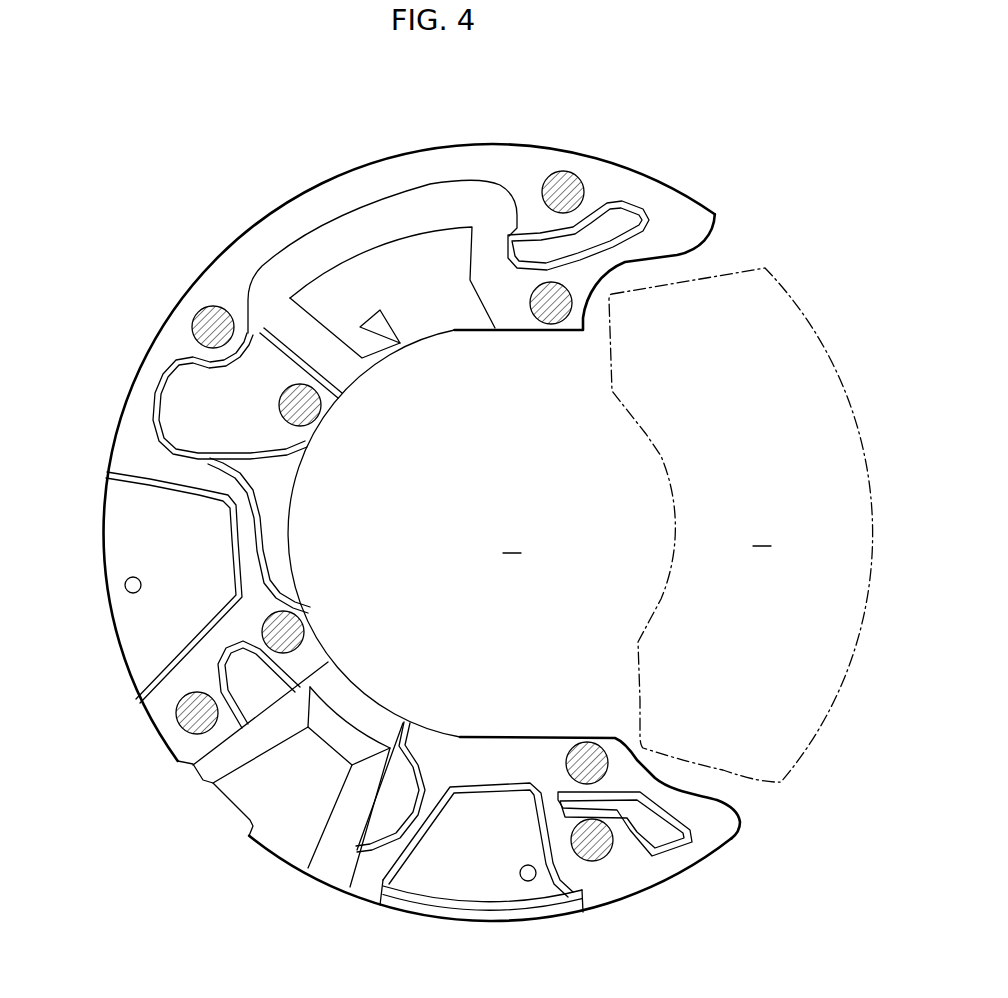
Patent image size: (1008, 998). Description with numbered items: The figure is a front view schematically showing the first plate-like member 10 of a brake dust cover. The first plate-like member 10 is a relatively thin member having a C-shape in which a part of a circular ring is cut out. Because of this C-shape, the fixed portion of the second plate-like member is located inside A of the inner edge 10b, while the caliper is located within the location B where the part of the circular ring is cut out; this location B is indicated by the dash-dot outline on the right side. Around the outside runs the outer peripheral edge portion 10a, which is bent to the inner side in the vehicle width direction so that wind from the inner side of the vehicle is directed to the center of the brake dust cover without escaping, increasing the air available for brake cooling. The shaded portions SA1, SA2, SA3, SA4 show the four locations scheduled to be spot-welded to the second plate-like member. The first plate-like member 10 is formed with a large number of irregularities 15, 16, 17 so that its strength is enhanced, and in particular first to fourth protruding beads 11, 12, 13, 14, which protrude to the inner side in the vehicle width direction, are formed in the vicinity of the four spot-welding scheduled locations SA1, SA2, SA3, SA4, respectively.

The first plate-like member 10 is at (652, 168).
The outer peripheral edge portion 10a is at (470, 146).
The inner edge 10b is at (452, 332).
The first protruding bead 11 is at (625, 213).
The second protruding bead 12 is at (183, 405).
The third protruding bead 13 is at (262, 694).
The fourth protruding bead 14 is at (634, 818).
The irregularity 15 is at (388, 266).
The irregularity 16 is at (148, 622).
The irregularity 17 is at (362, 704).
The spot-welding scheduled location SA1 is at (563, 188).
The spot-welding scheduled location SA2 is at (212, 324).
The spot-welding scheduled location SA3 is at (290, 627).
The spot-welding scheduled location SA4 is at (588, 760).
The inside of inner edge A is at (512, 540).
The cut-out location B is at (741, 525).